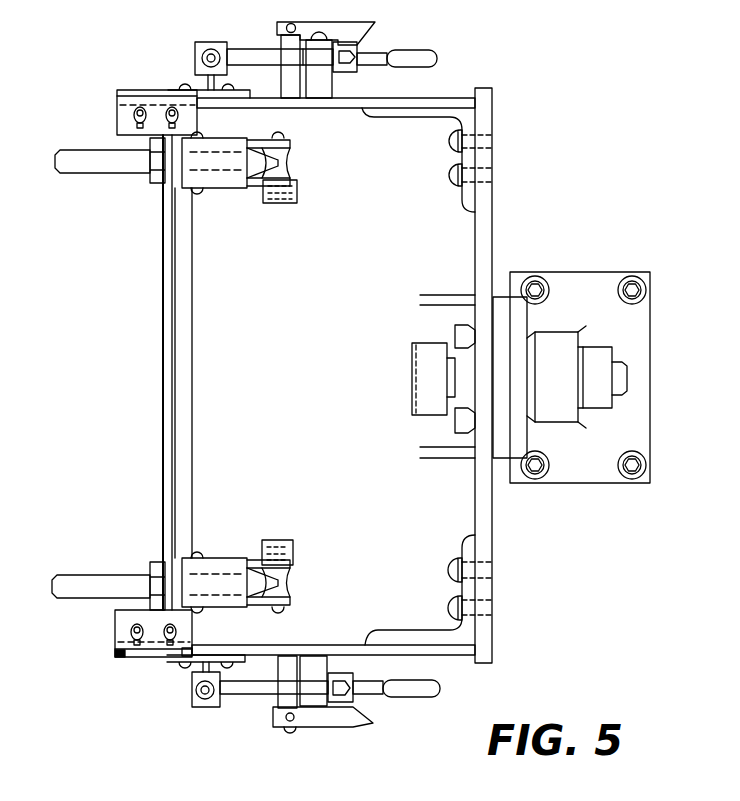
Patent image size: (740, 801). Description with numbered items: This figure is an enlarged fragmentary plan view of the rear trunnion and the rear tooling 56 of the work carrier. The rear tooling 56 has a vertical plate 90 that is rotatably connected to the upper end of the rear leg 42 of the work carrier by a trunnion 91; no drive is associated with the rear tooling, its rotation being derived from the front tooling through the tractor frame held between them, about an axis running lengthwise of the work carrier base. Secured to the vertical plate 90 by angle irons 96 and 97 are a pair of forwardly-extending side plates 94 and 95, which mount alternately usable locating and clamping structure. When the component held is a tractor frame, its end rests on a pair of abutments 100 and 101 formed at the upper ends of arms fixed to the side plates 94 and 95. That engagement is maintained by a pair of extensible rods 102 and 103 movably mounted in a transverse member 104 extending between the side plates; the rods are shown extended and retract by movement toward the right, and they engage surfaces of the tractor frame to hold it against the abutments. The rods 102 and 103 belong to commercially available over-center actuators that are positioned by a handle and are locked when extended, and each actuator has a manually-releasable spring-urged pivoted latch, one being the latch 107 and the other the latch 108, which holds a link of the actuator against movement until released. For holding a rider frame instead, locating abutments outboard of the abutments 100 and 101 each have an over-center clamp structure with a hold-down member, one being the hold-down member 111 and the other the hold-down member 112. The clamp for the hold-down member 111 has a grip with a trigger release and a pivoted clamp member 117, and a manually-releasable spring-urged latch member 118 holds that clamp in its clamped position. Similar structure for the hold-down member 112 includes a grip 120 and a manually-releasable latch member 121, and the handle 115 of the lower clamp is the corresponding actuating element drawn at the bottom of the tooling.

The rear leg 42 is at (604, 483).
The rear tooling 56 is at (466, 76).
The vertical plate 90 is at (492, 207).
The trunnion 91 is at (556, 328).
The side plate 94 is at (335, 108).
The side plate 95 is at (323, 645).
The angle iron 96 is at (470, 118).
The angle iron 97 is at (473, 636).
The abutment 100 is at (117, 116).
The abutment 101 is at (115, 628).
The extensible rod 102 is at (110, 176).
The extensible rod 103 is at (110, 575).
The transverse member 104 is at (193, 352).
The latch 107 is at (288, 540).
The latch 108 is at (280, 204).
The hold-down member 111 is at (192, 704).
The hold-down member 112 is at (210, 42).
The lower clamp handle 115 is at (440, 698).
The pivoted clamp member 117 is at (252, 702).
The latch member 118 is at (362, 726).
The grip 120 is at (412, 52).
The latch member 121 is at (373, 40).